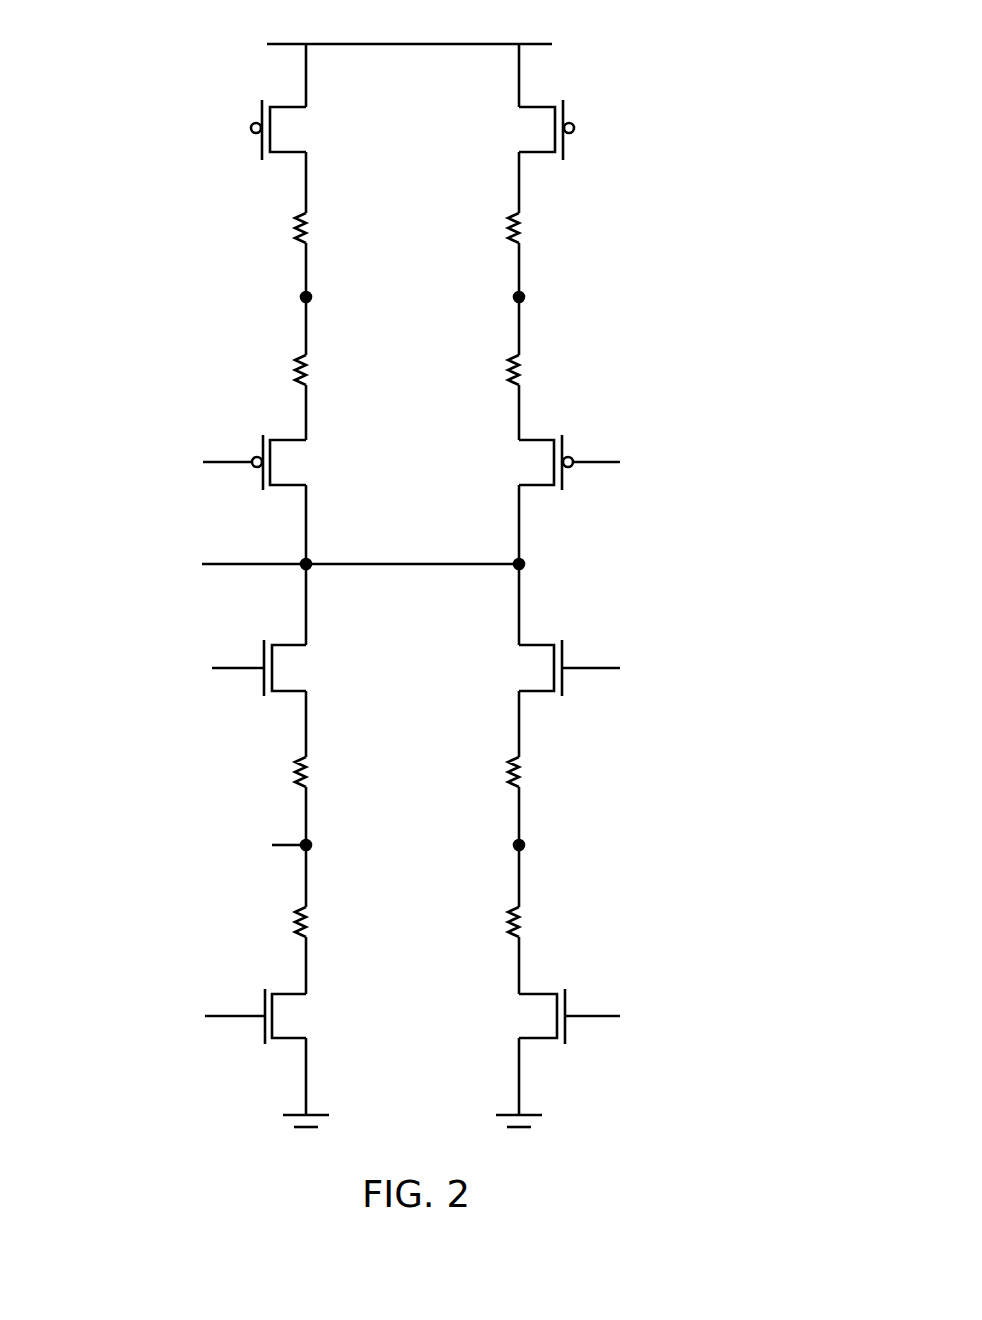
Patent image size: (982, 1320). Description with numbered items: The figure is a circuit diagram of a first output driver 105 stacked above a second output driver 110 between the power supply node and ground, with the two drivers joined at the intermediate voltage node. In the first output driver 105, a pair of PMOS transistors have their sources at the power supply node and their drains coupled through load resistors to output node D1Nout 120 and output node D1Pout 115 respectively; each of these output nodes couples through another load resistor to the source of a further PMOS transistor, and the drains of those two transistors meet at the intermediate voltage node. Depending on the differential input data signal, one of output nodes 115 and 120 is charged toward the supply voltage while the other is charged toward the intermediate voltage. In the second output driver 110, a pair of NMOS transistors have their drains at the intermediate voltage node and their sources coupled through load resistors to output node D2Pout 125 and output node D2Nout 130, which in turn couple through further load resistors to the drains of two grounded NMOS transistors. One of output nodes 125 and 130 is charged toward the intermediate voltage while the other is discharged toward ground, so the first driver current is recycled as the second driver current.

The first output driver 105 is at (140, 295).
The second output driver 110 is at (116, 846).
The output node D1Pout 115 is at (518, 297).
The output node D1Nout 120 is at (306, 297).
The output node D2Pout 125 is at (306, 845).
The output node D2Nout 130 is at (519, 845).